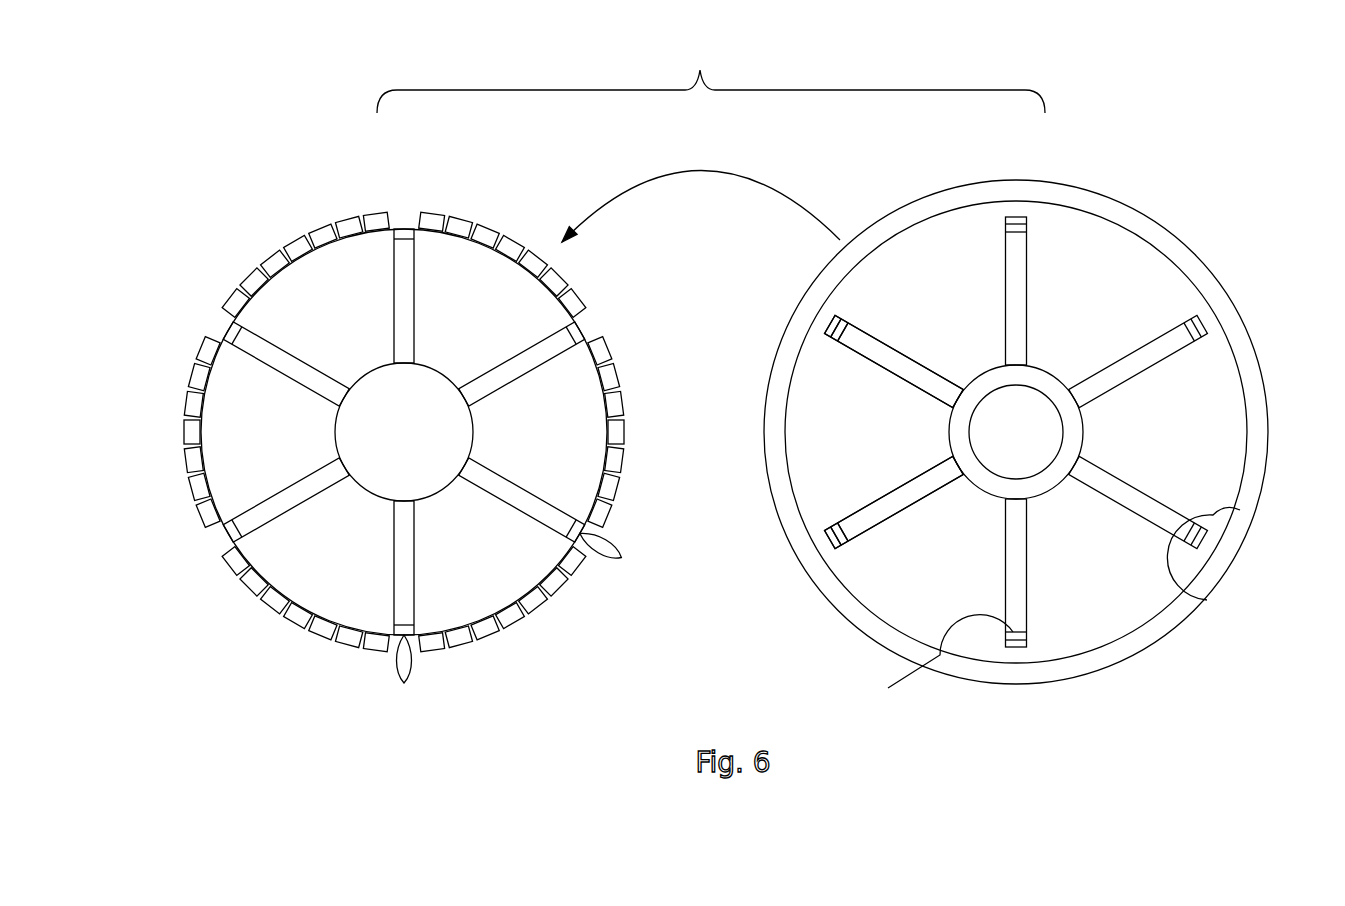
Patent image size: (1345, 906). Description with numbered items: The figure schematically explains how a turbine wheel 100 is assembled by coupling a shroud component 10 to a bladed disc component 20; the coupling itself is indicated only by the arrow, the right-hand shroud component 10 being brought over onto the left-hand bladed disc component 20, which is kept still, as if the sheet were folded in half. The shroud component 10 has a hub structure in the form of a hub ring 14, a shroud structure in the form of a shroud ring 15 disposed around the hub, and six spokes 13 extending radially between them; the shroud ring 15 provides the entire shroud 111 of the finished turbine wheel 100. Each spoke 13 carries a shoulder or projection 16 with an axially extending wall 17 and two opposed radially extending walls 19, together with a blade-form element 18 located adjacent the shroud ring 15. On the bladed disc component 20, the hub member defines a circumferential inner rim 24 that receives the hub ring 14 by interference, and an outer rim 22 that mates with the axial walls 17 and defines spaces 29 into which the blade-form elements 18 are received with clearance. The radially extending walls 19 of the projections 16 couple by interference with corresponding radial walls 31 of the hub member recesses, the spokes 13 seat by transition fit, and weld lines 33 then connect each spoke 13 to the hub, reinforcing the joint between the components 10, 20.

The turbine wheel 100 is at (711, 141).
The shroud component 10 is at (1019, 405).
The shroud 111 is at (1233, 255).
The spoke 13 is at (883, 352).
The hub ring 14 is at (1042, 385).
The shroud ring 15 is at (1145, 637).
The shoulder or projection 16 is at (835, 336).
The axially extending wall 17 is at (934, 658).
The blade-form element 18 is at (830, 545).
The radially extending wall 19 is at (1240, 510).
The bladed disc component 20 is at (397, 436).
The outer rim 22 is at (232, 536).
The inner rim 24 is at (368, 488).
The blade-form element receiving space 29 is at (222, 328).
The radially extending wall of the hub member 31 is at (518, 621).
The weld line 33 is at (520, 378).